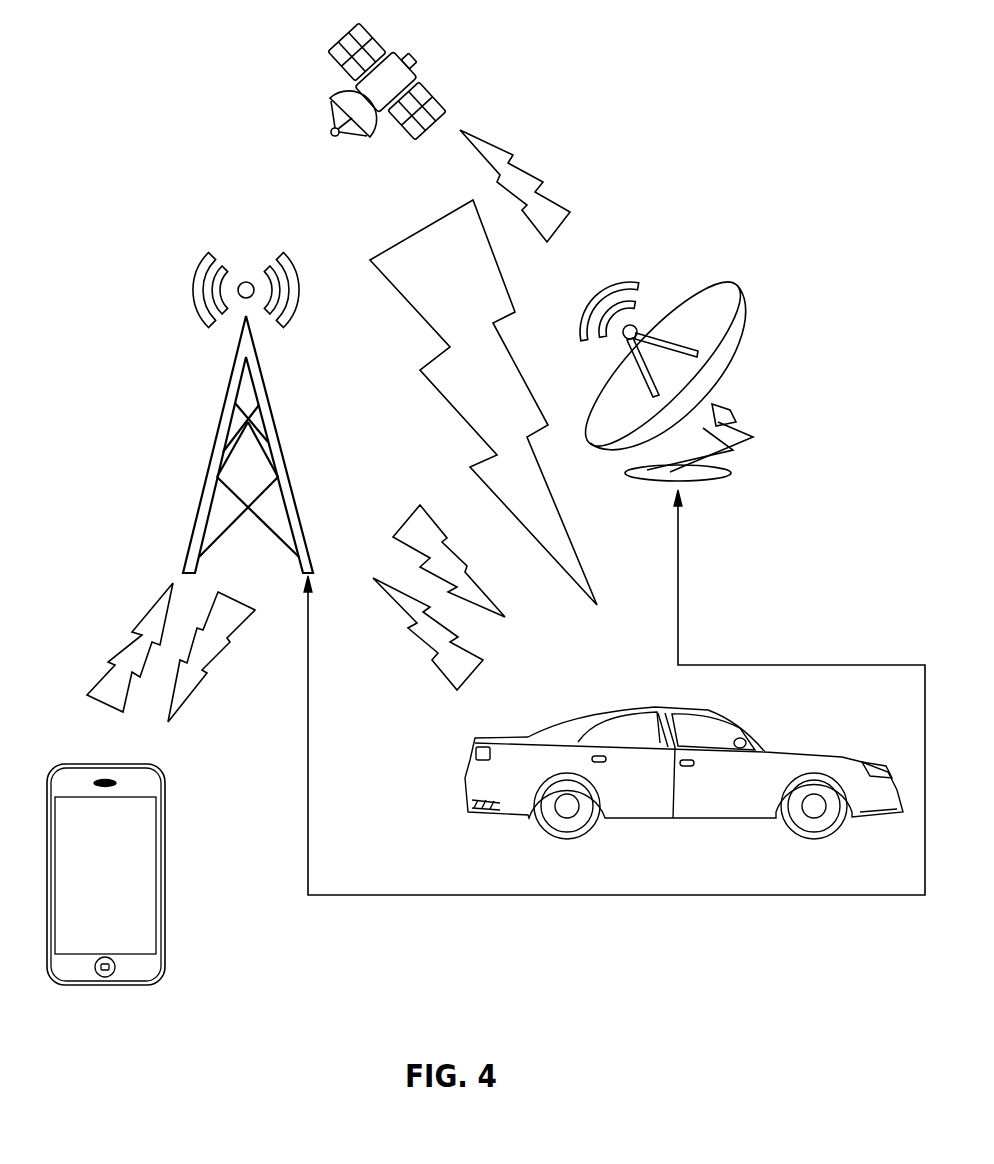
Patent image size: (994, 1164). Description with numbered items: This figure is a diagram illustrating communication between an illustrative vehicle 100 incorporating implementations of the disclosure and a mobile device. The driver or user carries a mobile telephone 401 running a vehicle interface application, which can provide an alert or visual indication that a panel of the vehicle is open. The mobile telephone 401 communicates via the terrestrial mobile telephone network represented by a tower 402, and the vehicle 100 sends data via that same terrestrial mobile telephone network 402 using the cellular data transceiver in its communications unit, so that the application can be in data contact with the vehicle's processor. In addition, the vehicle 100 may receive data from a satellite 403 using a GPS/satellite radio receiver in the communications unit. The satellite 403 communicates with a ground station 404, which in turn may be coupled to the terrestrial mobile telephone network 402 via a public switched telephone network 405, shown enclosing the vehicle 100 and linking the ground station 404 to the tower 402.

The vehicle 100 is at (690, 707).
The mobile telephone 401 is at (165, 880).
The tower 402 is at (199, 510).
The satellite 403 is at (417, 68).
The ground station 404 is at (754, 359).
The public switched telephone network 405 is at (818, 663).